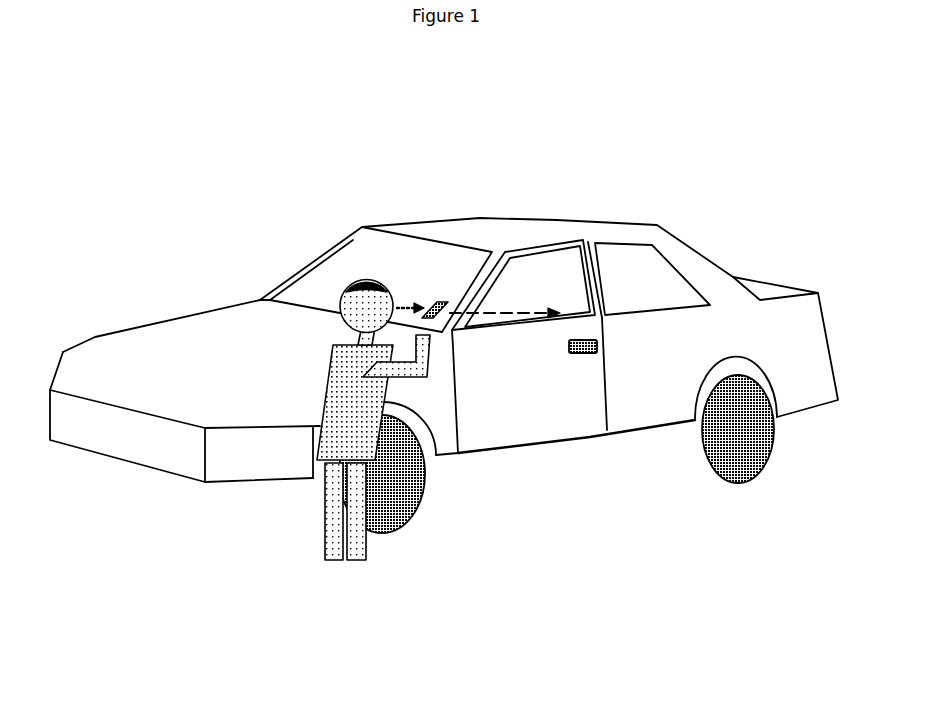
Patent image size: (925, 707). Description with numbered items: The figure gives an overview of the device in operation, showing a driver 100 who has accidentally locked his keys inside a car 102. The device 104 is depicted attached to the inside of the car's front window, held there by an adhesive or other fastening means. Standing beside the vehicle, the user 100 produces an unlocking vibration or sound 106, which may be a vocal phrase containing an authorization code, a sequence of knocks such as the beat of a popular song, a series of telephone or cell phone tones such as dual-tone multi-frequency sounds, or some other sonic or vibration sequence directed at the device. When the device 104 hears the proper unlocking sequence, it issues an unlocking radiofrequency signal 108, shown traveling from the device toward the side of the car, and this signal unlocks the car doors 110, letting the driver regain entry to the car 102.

The driver 100 is at (317, 385).
The car 102 is at (182, 307).
The device 104 is at (447, 295).
The unlocking vibration or sound 106 is at (403, 297).
The unlocking radiofrequency signal 108 is at (533, 305).
The car doors 110 is at (537, 408).